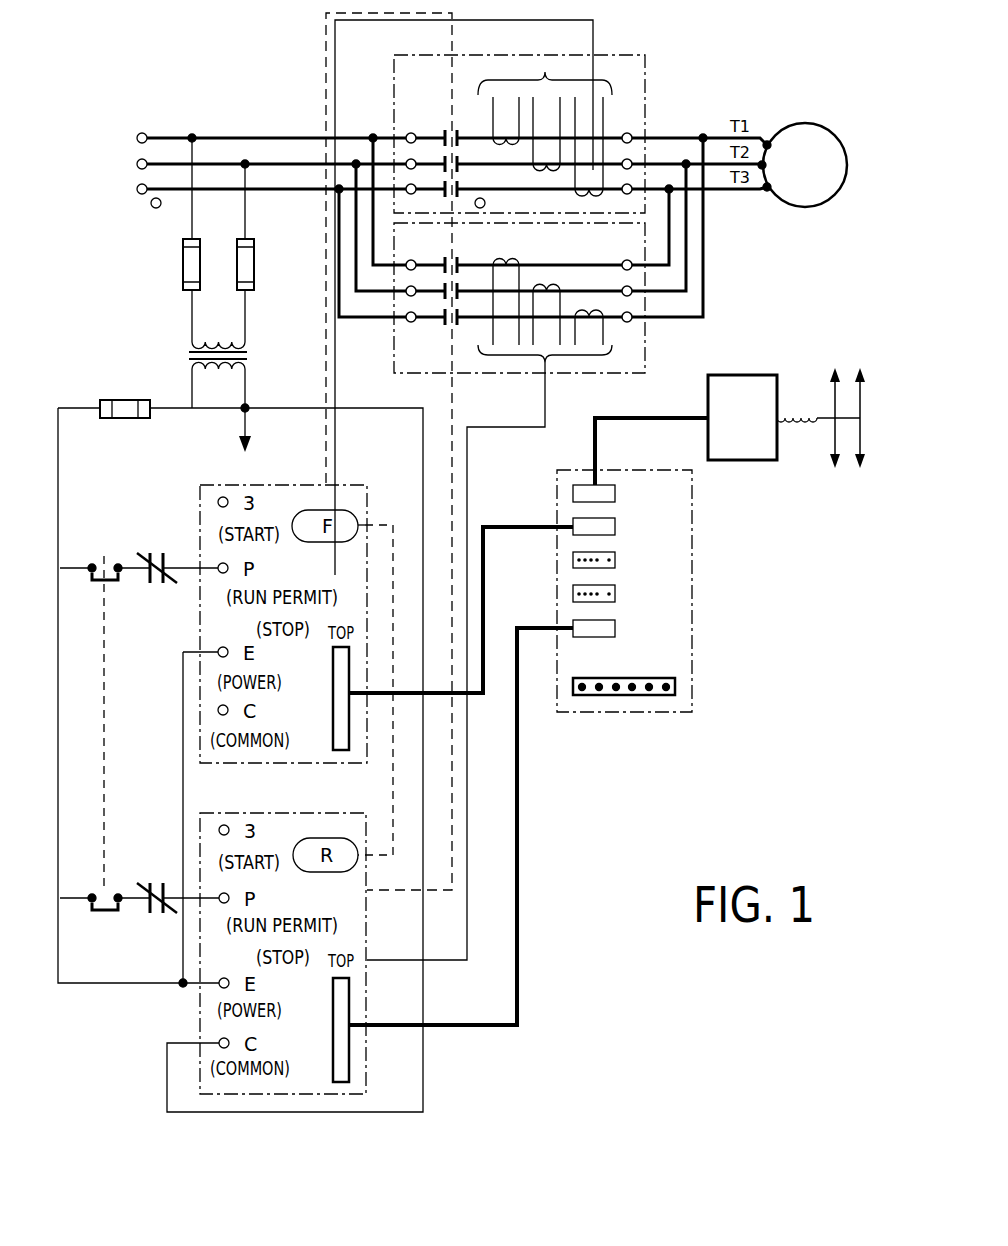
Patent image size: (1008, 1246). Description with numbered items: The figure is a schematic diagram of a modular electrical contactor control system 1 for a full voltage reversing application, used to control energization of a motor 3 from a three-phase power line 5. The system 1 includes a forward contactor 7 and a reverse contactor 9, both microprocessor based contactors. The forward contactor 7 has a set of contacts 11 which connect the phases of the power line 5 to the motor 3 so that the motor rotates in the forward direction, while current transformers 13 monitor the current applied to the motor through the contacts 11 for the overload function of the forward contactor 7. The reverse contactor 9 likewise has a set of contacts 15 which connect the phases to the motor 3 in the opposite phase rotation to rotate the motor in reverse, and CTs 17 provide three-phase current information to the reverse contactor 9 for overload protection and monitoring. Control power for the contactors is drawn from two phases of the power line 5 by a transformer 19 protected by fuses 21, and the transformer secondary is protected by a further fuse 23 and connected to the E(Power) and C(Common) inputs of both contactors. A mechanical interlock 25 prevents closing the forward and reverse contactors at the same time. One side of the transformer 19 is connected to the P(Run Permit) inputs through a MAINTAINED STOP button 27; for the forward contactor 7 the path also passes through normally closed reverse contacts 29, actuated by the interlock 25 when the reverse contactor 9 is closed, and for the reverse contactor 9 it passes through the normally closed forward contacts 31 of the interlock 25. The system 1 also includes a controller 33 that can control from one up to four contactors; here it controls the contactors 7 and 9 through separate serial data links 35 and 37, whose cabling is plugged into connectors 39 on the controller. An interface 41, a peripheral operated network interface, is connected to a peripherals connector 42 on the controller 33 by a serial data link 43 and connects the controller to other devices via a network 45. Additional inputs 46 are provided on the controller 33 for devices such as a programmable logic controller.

The modular electrical contactor control system 1 is at (667, 406).
The motor 3 is at (815, 122).
The three-phase power line 5 is at (176, 136).
The forward contactor 7 is at (590, 55).
The reverse contactor 9 is at (647, 337).
The contacts 11 is at (445, 130).
The current transformers 13 is at (575, 175).
The contacts 15 is at (459, 332).
The CTs 17 is at (603, 305).
The transformer 19 is at (190, 358).
The fuses 21 is at (236, 243).
The fuse 23 is at (118, 400).
The mechanical interlock 25 is at (393, 593).
The MAINTAINED STOP button 27 is at (104, 552).
The normally closed reverse contacts 29 is at (153, 550).
The normally closed forward contacts 31 is at (158, 882).
The controller 33 is at (640, 470).
The serial data link 35 is at (511, 505).
The serial data link 37 is at (535, 655).
The connectors 39 is at (573, 617).
The interface 41 is at (735, 375).
The peripherals connector 42 is at (575, 492).
The serial data link 43 is at (595, 440).
The network 45 is at (832, 440).
The additional inputs 46 is at (670, 695).